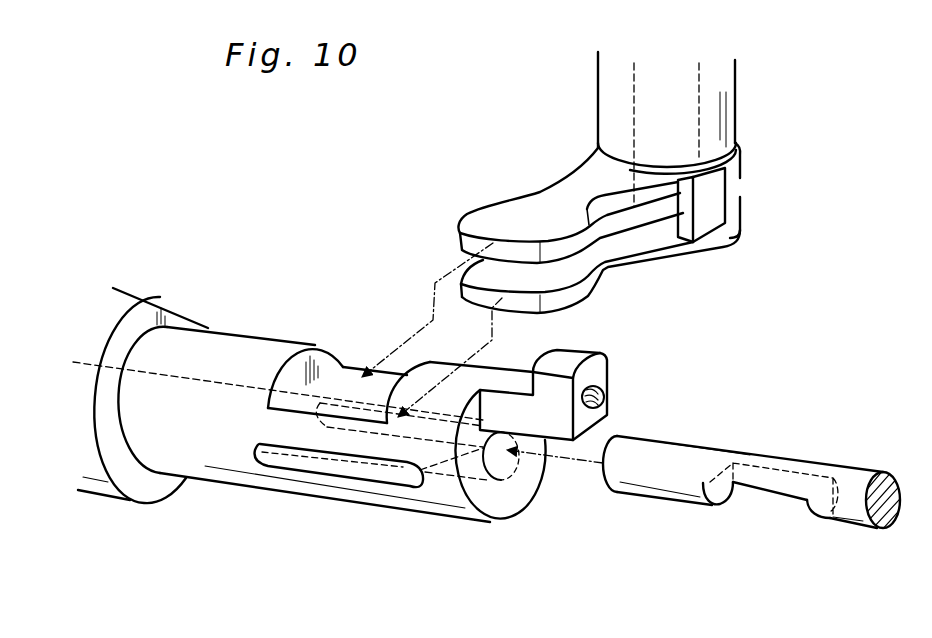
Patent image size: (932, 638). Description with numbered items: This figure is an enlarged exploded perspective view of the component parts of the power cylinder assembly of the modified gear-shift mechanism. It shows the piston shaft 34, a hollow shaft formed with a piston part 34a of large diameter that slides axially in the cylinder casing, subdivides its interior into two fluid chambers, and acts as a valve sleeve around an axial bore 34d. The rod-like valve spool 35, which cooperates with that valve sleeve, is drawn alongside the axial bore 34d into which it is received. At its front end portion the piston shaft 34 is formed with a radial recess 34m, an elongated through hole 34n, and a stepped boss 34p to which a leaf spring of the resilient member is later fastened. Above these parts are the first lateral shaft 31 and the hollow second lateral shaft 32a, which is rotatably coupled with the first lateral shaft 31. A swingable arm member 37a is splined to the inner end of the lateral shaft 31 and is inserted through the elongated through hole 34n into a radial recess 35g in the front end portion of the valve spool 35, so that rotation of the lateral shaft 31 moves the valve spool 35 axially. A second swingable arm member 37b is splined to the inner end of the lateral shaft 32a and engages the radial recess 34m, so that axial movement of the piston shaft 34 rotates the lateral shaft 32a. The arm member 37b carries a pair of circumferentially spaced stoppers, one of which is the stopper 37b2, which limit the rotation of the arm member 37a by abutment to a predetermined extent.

The first lateral shaft 31 is at (668, 210).
The second lateral shaft 32a is at (608, 90).
The piston shaft 34 is at (115, 503).
The piston part 34a is at (133, 297).
The axial bore 34d is at (488, 481).
The radial recess 34m is at (341, 362).
The elongated through hole 34n is at (265, 463).
The stepped boss 34p is at (600, 370).
The valve spool 35 is at (838, 462).
The radial recess 35g is at (718, 497).
The swingable arm member 37a is at (632, 258).
The swingable arm member 37b is at (580, 176).
The stopper 37b2 is at (725, 192).